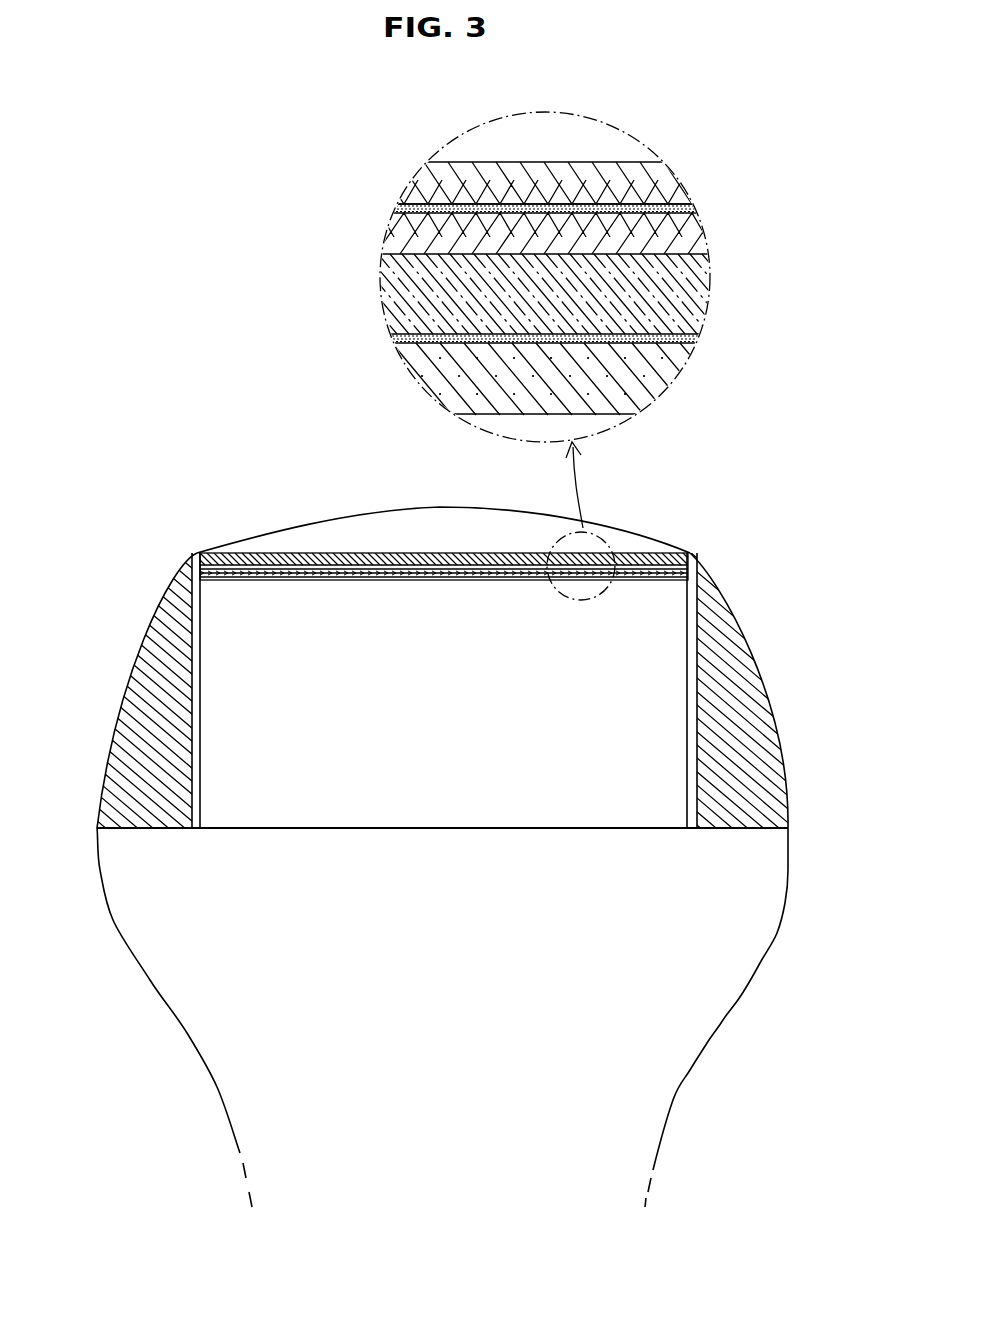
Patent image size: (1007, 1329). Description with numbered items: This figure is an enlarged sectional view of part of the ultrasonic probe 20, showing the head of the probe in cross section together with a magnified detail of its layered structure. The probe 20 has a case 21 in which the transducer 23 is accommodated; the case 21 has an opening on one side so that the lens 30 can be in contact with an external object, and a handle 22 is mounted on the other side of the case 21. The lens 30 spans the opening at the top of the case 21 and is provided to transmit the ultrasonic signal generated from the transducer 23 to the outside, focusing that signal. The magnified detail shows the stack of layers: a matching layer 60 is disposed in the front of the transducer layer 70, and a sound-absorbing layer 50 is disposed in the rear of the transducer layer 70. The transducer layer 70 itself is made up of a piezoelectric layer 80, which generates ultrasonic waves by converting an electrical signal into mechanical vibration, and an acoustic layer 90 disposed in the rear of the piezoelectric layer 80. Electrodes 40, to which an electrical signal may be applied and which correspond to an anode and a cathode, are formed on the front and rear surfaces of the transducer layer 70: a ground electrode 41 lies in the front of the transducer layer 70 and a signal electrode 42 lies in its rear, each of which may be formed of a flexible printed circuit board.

The ultrasonic probe 20 is at (363, 487).
The case 21 is at (118, 745).
The handle 22 is at (110, 851).
The transducer 23 is at (243, 713).
The lens 30 is at (301, 558).
The electrodes 40 is at (585, 273).
The ground electrode 41 is at (682, 210).
The signal electrode 42 is at (693, 340).
The sound-absorbing layer 50 is at (660, 387).
The matching layer 60 is at (667, 182).
The transducer layer 70 is at (748, 225).
The piezoelectric layer 80 is at (680, 230).
The acoustic layer 90 is at (692, 283).